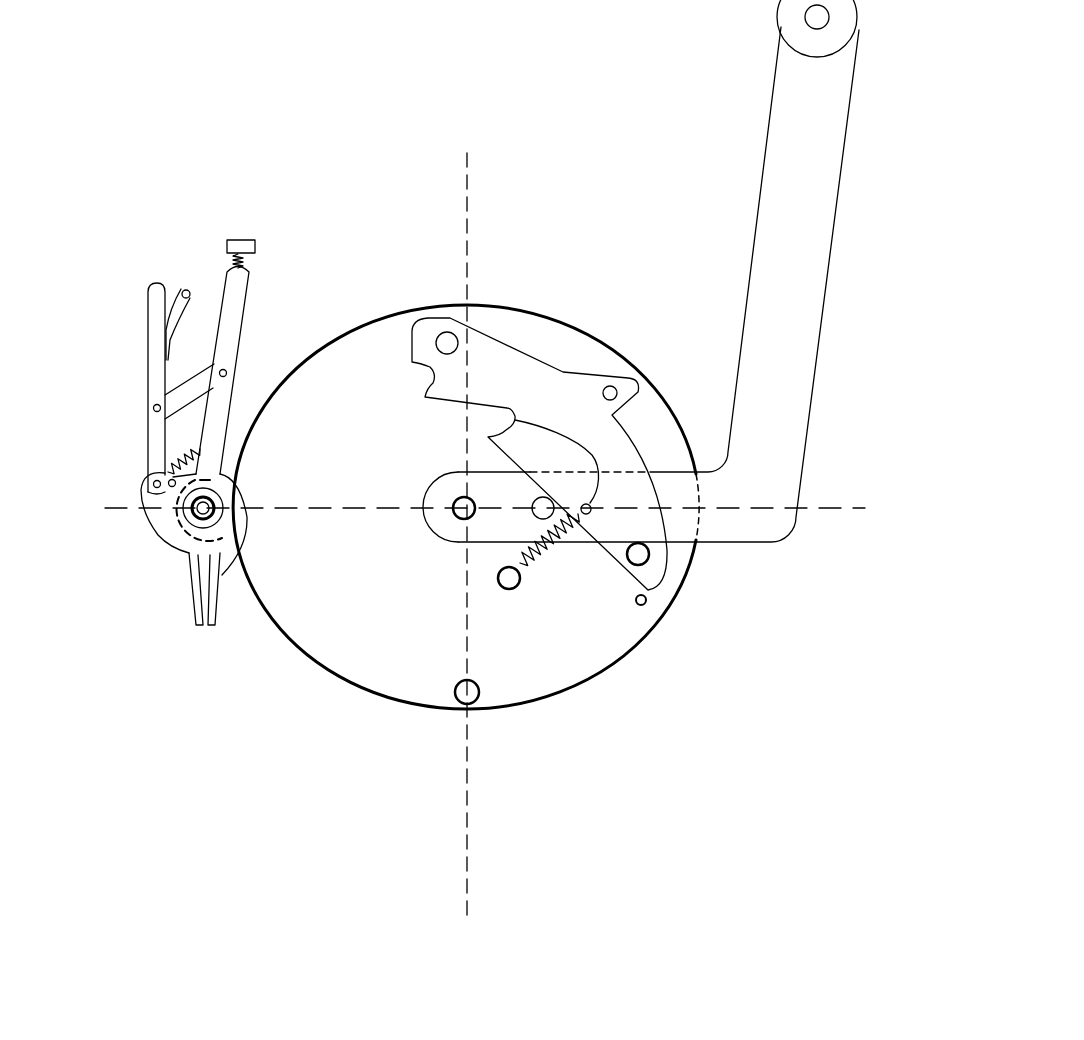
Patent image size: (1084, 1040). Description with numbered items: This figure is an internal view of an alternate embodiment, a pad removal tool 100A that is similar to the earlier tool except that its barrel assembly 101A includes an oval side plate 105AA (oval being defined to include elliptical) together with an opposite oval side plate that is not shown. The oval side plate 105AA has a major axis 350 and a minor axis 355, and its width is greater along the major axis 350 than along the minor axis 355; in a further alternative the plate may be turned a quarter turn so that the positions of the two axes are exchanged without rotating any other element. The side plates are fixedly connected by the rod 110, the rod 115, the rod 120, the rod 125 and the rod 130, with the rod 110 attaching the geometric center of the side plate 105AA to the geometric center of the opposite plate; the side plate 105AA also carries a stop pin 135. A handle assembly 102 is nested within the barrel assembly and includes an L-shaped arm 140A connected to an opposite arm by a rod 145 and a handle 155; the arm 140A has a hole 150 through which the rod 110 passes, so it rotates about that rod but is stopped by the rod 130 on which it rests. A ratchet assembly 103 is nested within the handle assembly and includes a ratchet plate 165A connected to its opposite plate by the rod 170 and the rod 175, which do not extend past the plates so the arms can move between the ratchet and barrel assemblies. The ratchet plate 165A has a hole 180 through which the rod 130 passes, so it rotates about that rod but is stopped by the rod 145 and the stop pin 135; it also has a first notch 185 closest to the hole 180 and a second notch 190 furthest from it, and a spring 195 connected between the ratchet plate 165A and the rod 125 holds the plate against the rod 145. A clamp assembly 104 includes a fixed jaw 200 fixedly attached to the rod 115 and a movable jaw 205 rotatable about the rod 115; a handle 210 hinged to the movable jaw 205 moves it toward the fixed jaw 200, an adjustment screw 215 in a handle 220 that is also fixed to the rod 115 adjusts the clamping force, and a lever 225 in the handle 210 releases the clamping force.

The pad removal tool 100A is at (265, 92).
The barrel assembly 101A is at (443, 262).
The handle assembly 102 is at (708, 162).
The ratchet assembly 103 is at (545, 338).
The clamp assembly 104 is at (268, 268).
The oval side plate 105AA is at (318, 637).
The rod 110 is at (463, 517).
The rod 115 is at (207, 512).
The rod 120 is at (473, 691).
The rod 125 is at (512, 588).
The rod 130 is at (630, 559).
The stop pin 135 is at (636, 601).
The L-shaped arm 140A is at (753, 392).
The rod 145 is at (542, 512).
The hole 150 is at (455, 497).
The handle 155 is at (803, 60).
The ratchet plate 165A is at (580, 423).
The rod 170 is at (455, 345).
The rod 175 is at (603, 393).
The hole 180 is at (633, 537).
The first notch 185 is at (548, 447).
The second notch 190 is at (434, 384).
The spring 195 is at (558, 562).
The fixed jaw 200 is at (221, 577).
The movable jaw 205 is at (181, 568).
The handle 210 is at (155, 285).
The adjustment screw 215 is at (240, 238).
The handle 220 is at (237, 308).
The lever 225 is at (186, 291).
The major axis 350 is at (347, 507).
The minor axis 355 is at (468, 166).